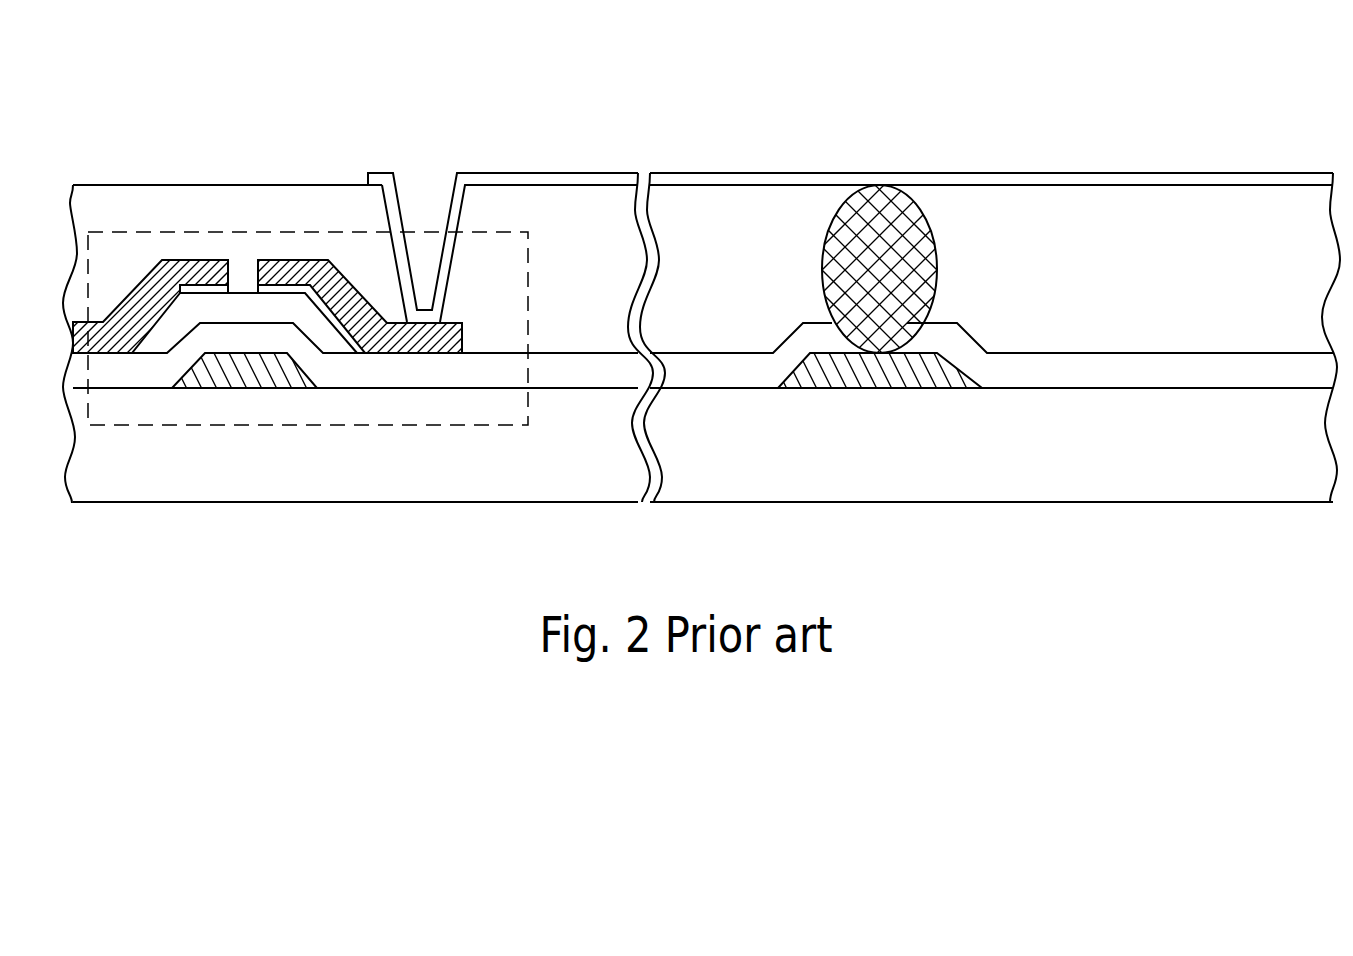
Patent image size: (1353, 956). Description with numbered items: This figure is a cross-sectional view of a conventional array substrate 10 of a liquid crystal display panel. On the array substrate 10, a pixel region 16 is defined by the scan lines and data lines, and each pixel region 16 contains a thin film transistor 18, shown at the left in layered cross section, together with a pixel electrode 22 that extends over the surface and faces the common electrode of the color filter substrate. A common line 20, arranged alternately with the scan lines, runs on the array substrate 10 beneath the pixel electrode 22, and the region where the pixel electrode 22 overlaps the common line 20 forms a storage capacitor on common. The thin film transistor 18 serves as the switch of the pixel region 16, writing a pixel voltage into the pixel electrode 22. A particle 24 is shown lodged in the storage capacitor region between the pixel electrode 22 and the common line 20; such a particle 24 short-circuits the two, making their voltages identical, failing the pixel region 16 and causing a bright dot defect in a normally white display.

The array substrate 10 is at (975, 455).
The pixel region 16 is at (369, 93).
The thin film transistor 18 is at (312, 425).
The common line 20 is at (877, 388).
The pixel electrode 22 is at (1255, 181).
The particle 24 is at (917, 248).